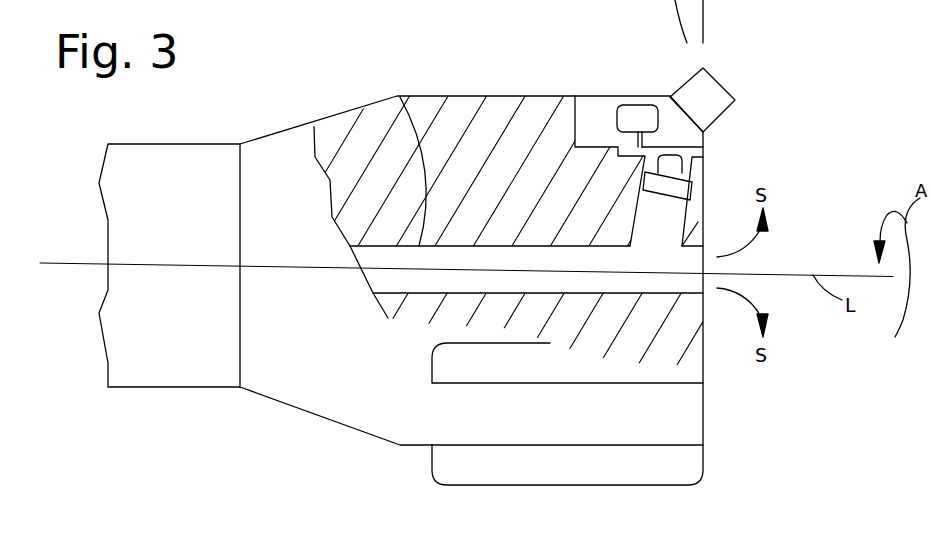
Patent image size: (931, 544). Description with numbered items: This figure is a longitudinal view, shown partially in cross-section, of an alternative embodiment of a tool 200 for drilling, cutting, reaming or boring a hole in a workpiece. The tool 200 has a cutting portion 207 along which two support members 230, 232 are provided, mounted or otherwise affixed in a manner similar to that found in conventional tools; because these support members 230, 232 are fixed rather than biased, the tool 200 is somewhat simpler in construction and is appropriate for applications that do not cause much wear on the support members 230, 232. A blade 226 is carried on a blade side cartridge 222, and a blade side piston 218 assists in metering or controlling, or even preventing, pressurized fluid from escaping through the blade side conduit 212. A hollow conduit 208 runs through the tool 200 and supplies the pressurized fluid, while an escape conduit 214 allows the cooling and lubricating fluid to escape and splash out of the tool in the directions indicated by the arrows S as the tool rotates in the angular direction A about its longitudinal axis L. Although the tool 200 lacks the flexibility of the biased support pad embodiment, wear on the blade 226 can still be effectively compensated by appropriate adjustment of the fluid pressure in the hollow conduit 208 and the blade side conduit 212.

The tool 200 is at (366, 40).
The cutting portion 207 is at (473, 96).
The hollow conduit 208 is at (400, 97).
The blade side conduit 212 is at (705, 217).
The escape conduit 214 is at (705, 263).
The blade side piston 218 is at (705, 187).
The blade side cartridge 222 is at (590, 78).
The blade 226 is at (718, 85).
The support member 230 is at (633, 488).
The support member 232 is at (658, 385).